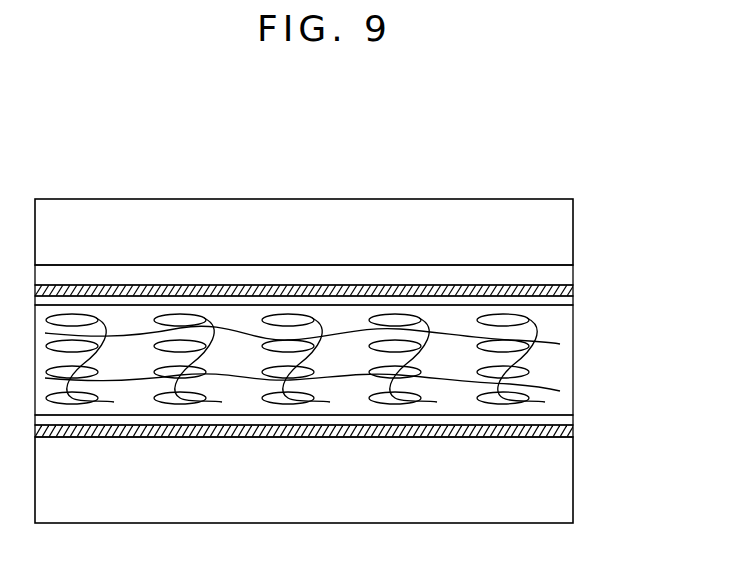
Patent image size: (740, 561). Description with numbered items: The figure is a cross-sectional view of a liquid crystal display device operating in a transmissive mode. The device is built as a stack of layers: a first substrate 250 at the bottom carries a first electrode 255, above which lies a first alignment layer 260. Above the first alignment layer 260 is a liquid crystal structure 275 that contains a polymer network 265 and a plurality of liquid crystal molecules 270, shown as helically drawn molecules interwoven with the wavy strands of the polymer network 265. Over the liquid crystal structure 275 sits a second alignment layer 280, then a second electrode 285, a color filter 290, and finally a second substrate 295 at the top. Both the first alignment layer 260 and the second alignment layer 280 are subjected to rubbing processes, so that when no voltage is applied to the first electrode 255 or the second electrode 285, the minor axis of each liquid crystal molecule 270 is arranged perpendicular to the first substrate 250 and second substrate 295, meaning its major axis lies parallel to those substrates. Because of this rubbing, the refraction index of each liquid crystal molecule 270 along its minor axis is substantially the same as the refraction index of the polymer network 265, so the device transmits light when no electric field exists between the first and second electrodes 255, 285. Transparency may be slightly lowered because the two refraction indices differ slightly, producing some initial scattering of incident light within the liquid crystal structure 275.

The second substrate 295 is at (566, 219).
The color filter 290 is at (566, 268).
The second electrode 285 is at (566, 290).
The second alignment layer 280 is at (566, 302).
The liquid crystal structure 275 is at (660, 320).
The liquid crystal molecules 270 is at (510, 318).
The polymer network 265 is at (518, 362).
The first alignment layer 260 is at (566, 420).
The first electrode 255 is at (566, 432).
The first substrate 250 is at (566, 477).